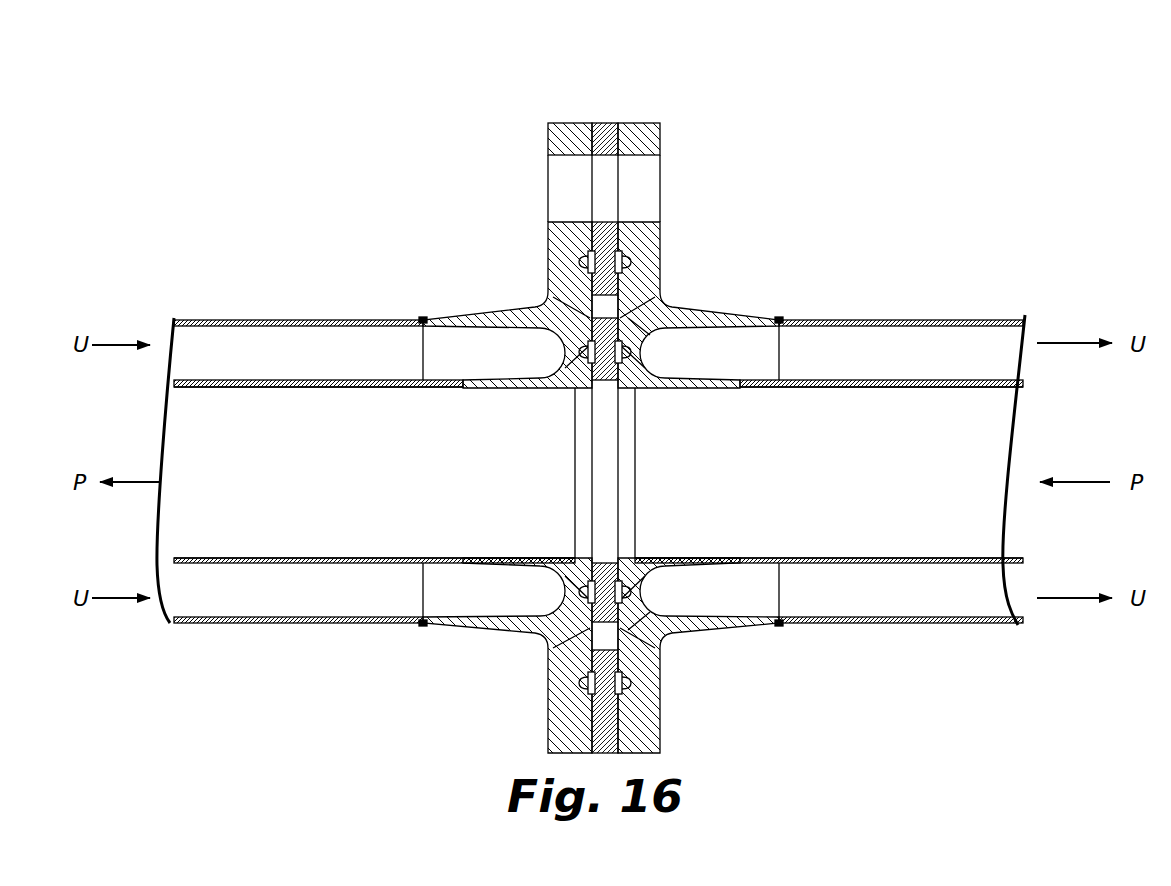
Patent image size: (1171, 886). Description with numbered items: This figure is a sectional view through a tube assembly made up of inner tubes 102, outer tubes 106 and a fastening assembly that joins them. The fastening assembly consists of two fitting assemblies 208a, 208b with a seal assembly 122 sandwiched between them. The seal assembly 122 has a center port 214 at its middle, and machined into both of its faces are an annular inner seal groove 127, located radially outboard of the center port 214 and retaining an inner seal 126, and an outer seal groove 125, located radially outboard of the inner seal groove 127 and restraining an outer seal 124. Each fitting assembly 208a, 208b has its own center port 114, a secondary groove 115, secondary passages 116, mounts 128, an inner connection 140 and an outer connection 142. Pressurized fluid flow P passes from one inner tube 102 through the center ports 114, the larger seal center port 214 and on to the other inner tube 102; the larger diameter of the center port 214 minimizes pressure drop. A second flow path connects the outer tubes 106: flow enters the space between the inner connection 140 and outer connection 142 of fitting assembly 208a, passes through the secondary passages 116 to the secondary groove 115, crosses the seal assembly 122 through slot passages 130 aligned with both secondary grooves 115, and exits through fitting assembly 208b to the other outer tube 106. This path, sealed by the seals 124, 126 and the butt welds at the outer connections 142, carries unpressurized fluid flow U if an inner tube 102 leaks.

The inner tube 102 is at (990, 386).
The outer tube 106 is at (955, 320).
The center port 114 is at (626, 525).
The secondary groove 115 is at (627, 305).
The secondary passages 116 is at (640, 326).
The seal assembly 122 is at (601, 113).
The outer seal 124 is at (587, 262).
The outer seal groove 125 is at (592, 252).
The inner seal 126 is at (589, 357).
The inner seal groove 127 is at (595, 362).
The mounts 128 is at (640, 147).
The slot passages 130 is at (620, 296).
The inner connection 140 is at (705, 338).
The outer connection 142 is at (766, 320).
The fitting assembly 208a is at (558, 113).
The fitting assembly 208b is at (638, 113).
The center port 214 is at (603, 485).